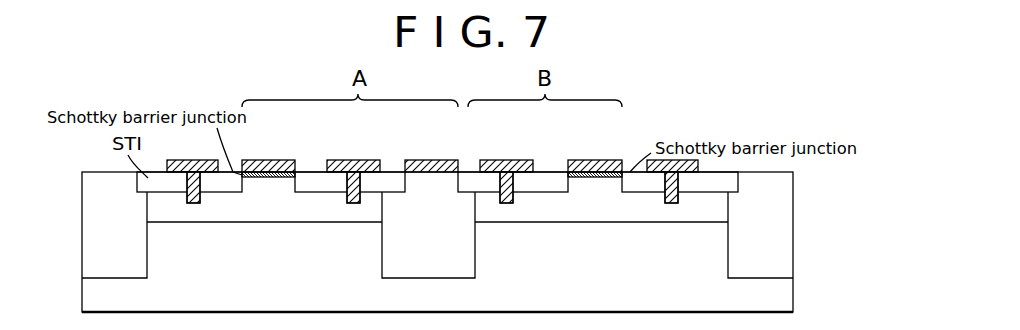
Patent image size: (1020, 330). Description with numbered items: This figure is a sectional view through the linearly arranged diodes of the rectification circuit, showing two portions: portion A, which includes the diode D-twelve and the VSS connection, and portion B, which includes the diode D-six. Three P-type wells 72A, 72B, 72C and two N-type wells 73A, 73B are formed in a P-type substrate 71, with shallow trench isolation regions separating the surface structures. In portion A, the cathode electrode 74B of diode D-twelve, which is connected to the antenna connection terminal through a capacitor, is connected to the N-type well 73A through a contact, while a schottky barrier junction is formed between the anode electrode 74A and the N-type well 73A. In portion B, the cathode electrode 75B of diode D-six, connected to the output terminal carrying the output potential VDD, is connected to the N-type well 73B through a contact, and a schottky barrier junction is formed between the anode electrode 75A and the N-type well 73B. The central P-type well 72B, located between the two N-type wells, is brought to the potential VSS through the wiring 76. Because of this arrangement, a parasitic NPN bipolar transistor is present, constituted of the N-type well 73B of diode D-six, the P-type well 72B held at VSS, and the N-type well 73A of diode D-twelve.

The P-type substrate 71 is at (793, 296).
The P-type well 72A is at (142, 268).
The P-type well 72B is at (470, 268).
The P-type well 72C is at (793, 263).
The N-type well 73A is at (335, 215).
The N-type well 73B is at (643, 215).
The anode electrode 74A is at (297, 156).
The cathode electrode 74B is at (394, 156).
The anode electrode 75A is at (617, 156).
The cathode electrode 75B is at (532, 156).
The wiring 76 is at (448, 158).